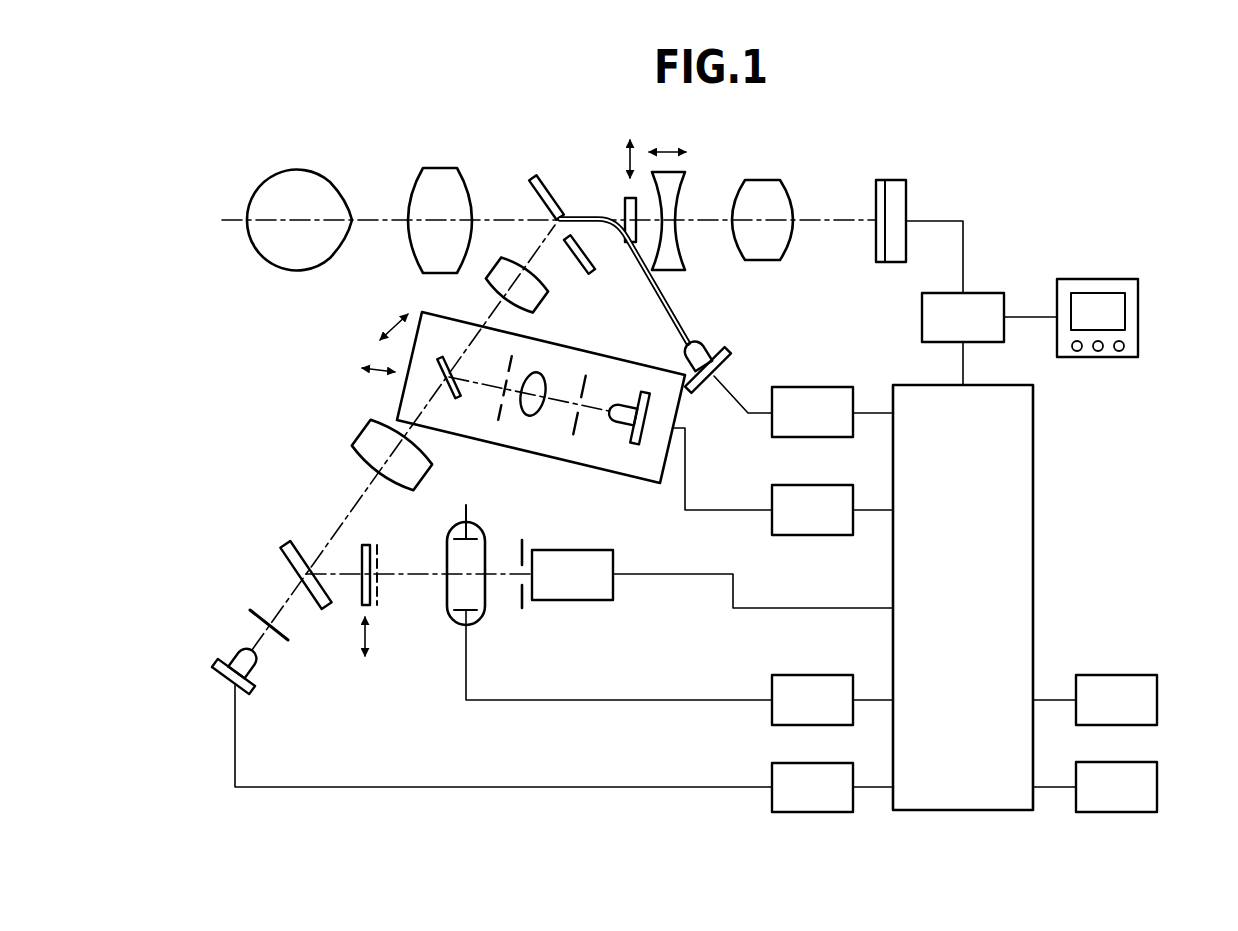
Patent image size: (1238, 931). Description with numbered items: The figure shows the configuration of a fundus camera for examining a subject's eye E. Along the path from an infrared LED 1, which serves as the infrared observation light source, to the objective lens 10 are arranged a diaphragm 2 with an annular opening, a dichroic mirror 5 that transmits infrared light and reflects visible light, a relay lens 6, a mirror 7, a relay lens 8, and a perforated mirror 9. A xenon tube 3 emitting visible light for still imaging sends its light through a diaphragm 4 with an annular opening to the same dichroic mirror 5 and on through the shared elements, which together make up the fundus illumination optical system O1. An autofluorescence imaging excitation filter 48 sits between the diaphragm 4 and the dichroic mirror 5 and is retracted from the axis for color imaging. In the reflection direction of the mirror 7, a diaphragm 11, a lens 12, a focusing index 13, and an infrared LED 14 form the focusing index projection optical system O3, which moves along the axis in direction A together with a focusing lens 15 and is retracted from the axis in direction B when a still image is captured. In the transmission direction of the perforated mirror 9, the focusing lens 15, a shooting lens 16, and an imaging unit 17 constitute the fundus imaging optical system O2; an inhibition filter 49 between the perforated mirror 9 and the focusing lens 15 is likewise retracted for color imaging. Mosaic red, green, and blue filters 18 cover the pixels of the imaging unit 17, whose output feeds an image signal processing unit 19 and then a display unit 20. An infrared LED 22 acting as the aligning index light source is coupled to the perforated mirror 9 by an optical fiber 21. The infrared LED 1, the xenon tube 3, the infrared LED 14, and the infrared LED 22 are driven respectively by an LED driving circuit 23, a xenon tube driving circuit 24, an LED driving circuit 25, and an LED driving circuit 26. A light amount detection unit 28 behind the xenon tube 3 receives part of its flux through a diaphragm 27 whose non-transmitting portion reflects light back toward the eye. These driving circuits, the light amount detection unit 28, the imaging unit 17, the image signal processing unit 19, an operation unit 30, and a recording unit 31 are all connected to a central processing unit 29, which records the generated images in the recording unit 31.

The infrared light emitting diode 1 is at (255, 688).
The diaphragm 2 is at (252, 610).
The xenon tube 3 is at (447, 592).
The diaphragm 4 is at (377, 555).
The dichroic mirror 5 is at (282, 537).
The relay lens 6 is at (362, 432).
The mirror 7 is at (447, 357).
The relay lens 8 is at (540, 313).
The perforated mirror 9 is at (537, 182).
The objective lens 10 is at (440, 168).
The diaphragm 11 is at (513, 363).
The lens 12 is at (523, 413).
The focusing index 13 is at (573, 423).
The infrared LED 14 is at (620, 397).
The focusing lens 15 is at (685, 172).
The shooting lens 16 is at (767, 180).
The imaging unit 17 is at (898, 198).
The filters 18 is at (882, 180).
The image signal processing unit 19 is at (987, 293).
The display unit 20 is at (1140, 313).
The optical fiber 21 is at (663, 322).
The infrared LED 22 is at (697, 347).
The LED driving circuit 23 is at (800, 763).
The xenon tube driving circuit 24 is at (818, 675).
The LED driving circuit 25 is at (798, 485).
The LED driving circuit 26 is at (815, 387).
The diaphragm 27 is at (532, 607).
The light amount detection unit 28 is at (582, 600).
The central processing unit 29 is at (1037, 592).
The operation unit 30 is at (1157, 787).
The recording unit 31 is at (1157, 700).
The autofluorescence imaging excitation filter 48 is at (370, 612).
The inhibition filter 49 is at (628, 200).
The subject's eye E is at (298, 170).
The fundus illumination optical system O1 is at (352, 507).
The fundus imaging optical system O2 is at (838, 217).
The focusing index projection optical system O3 is at (620, 468).
The direction A is at (387, 323).
The direction B is at (378, 384).